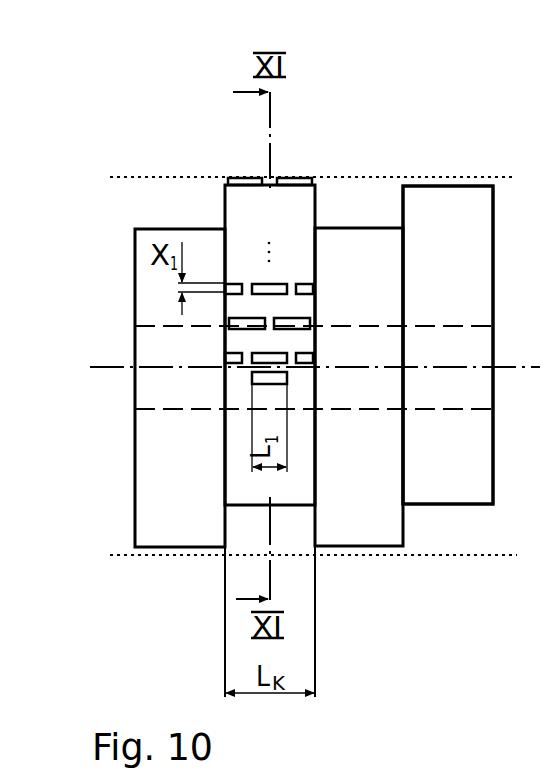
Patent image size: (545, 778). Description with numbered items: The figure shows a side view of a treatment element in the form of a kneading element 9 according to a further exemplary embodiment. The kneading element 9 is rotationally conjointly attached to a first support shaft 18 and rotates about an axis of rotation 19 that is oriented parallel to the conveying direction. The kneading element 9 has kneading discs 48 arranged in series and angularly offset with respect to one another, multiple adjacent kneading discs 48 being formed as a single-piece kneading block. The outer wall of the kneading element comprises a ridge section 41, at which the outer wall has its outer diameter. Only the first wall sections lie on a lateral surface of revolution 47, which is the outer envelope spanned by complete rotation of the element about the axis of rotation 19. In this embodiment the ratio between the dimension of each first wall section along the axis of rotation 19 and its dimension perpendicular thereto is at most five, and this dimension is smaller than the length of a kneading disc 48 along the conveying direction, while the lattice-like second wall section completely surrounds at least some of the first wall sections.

The kneading element 9 is at (446, 165).
The first support shaft 18 is at (437, 410).
The axis of rotation 19 is at (342, 368).
The ridge section 41 is at (298, 178).
The lateral surface of revolution 47 is at (385, 177).
The kneading disc 48 is at (225, 184).